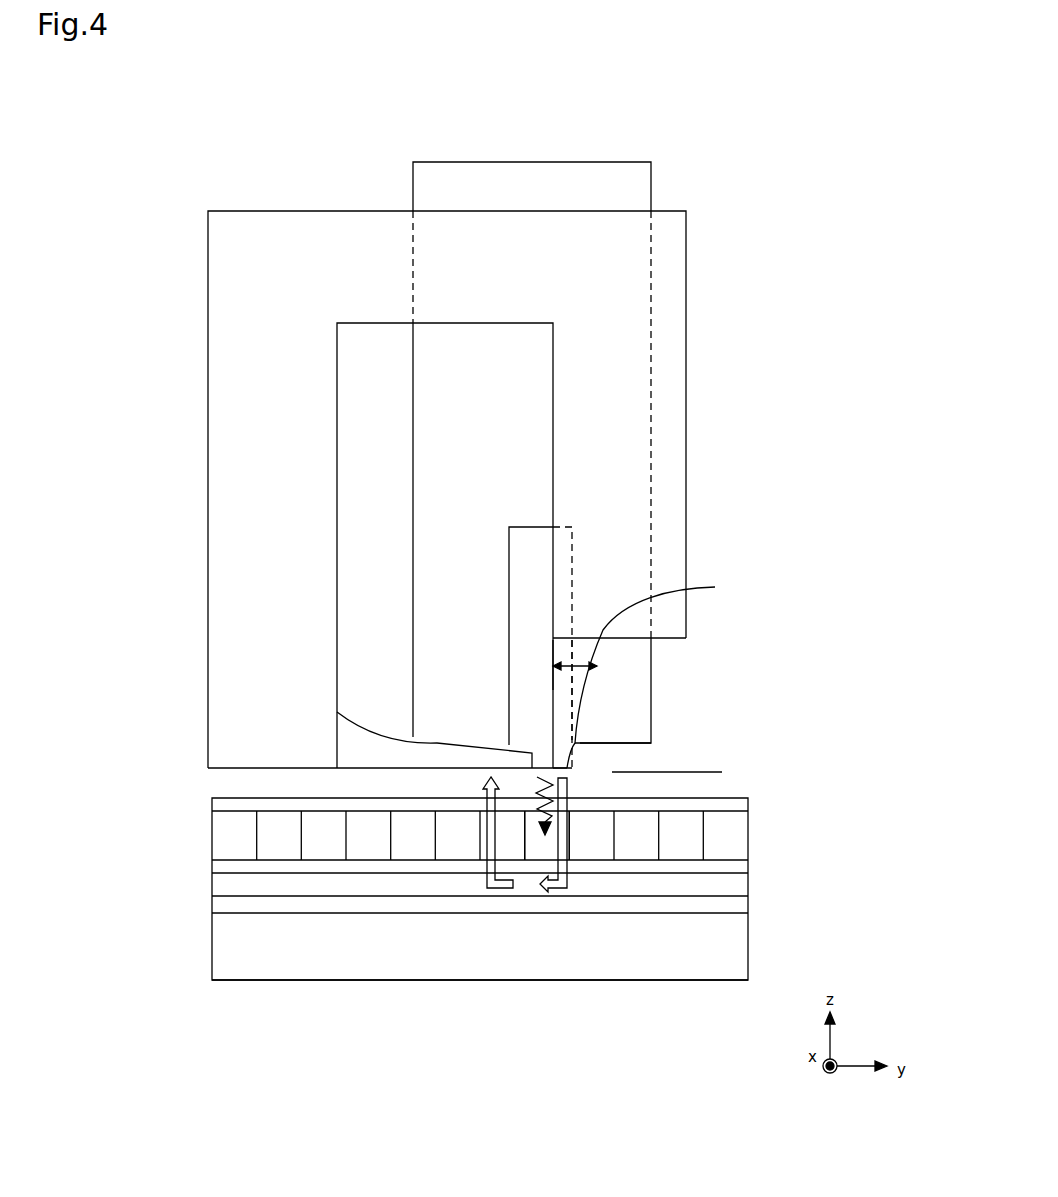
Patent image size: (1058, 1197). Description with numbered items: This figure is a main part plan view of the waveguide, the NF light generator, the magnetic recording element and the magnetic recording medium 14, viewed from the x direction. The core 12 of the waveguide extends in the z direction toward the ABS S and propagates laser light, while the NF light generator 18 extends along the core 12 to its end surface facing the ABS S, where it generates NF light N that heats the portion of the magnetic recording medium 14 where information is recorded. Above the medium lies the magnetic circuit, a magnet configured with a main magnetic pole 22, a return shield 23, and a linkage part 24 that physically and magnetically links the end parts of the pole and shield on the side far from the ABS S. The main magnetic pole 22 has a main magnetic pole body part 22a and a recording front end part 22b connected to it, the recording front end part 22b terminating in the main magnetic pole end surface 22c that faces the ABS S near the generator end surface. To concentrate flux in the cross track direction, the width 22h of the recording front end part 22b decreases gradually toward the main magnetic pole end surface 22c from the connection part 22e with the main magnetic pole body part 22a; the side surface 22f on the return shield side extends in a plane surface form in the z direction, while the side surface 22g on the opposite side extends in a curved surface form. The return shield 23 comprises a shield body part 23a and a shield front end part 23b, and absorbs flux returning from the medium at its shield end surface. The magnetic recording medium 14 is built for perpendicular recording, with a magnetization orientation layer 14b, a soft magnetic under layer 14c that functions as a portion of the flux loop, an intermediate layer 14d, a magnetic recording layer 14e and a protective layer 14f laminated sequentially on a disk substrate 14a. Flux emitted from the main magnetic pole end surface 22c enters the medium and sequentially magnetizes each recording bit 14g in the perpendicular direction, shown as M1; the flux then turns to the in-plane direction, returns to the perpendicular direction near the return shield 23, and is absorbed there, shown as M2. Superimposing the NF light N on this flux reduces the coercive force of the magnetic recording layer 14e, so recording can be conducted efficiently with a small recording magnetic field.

The core 12 is at (440, 473).
The magnetic recording medium 14 is at (849, 797).
The disk substrate 14a is at (748, 927).
The magnetization orientation layer 14b is at (748, 906).
The soft magnetic under layer 14c is at (748, 884).
The intermediate layer 14d is at (748, 866).
The magnetic recording layer 14e is at (748, 835).
The protective layer 14f is at (748, 802).
The recording bit 14g is at (542, 853).
The NF light generator 18 is at (521, 568).
The main magnetic pole 22 is at (772, 625).
The main magnetic pole body part 22a is at (667, 634).
The recording front end part 22b is at (567, 687).
The main magnetic pole end surface 22c is at (566, 770).
The connection part 22e is at (656, 674).
The side surface 22f is at (553, 662).
The side surface 22g is at (578, 717).
The width 22h is at (597, 648).
The return shield 23 is at (146, 598).
The shield body part 23a is at (230, 612).
The shield front end part 23b is at (352, 742).
The linkage part 24 is at (361, 226).
The ABS S is at (676, 775).
The NF light N is at (535, 781).
The magnetic flux M1 is at (564, 837).
The magnetic flux M2 is at (485, 837).